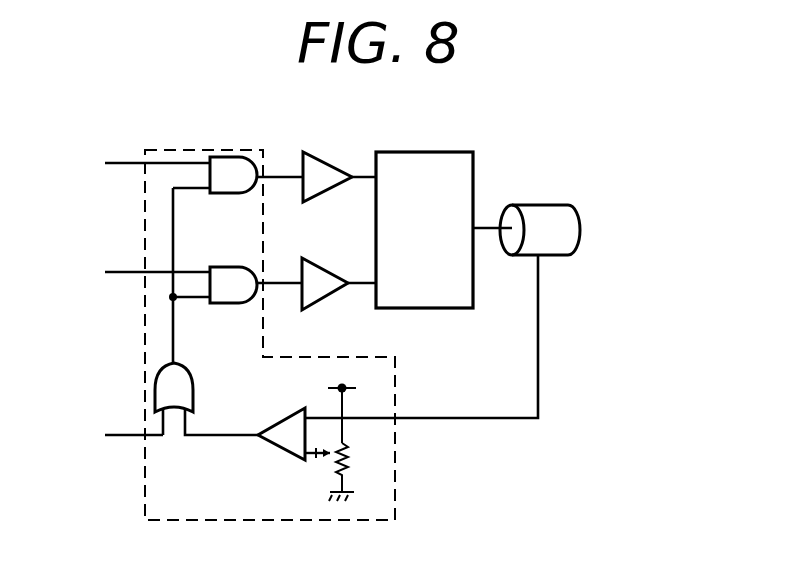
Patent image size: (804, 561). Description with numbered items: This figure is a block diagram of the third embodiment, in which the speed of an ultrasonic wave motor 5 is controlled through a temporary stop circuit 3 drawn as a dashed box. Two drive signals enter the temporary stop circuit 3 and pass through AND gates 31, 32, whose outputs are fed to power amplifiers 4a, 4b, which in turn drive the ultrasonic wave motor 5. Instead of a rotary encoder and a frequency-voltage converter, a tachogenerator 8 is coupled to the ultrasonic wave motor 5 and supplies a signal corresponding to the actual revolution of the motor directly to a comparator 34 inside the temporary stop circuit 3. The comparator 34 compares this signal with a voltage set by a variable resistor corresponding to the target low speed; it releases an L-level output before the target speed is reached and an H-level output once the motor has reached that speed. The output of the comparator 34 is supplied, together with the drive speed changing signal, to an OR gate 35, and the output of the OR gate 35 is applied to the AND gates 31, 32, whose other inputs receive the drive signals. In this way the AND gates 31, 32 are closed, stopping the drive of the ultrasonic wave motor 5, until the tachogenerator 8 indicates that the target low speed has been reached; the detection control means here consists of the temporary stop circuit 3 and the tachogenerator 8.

The temporary stop circuit 3 is at (216, 148).
The AND gate 31 is at (229, 193).
The AND gate 32 is at (229, 303).
The comparator 34 is at (270, 447).
The OR gate 35 is at (193, 390).
The power amplifier 4a is at (325, 156).
The power amplifier 4b is at (331, 257).
The ultrasonic wave motor 5 is at (435, 152).
The tachogenerator 8 is at (530, 205).